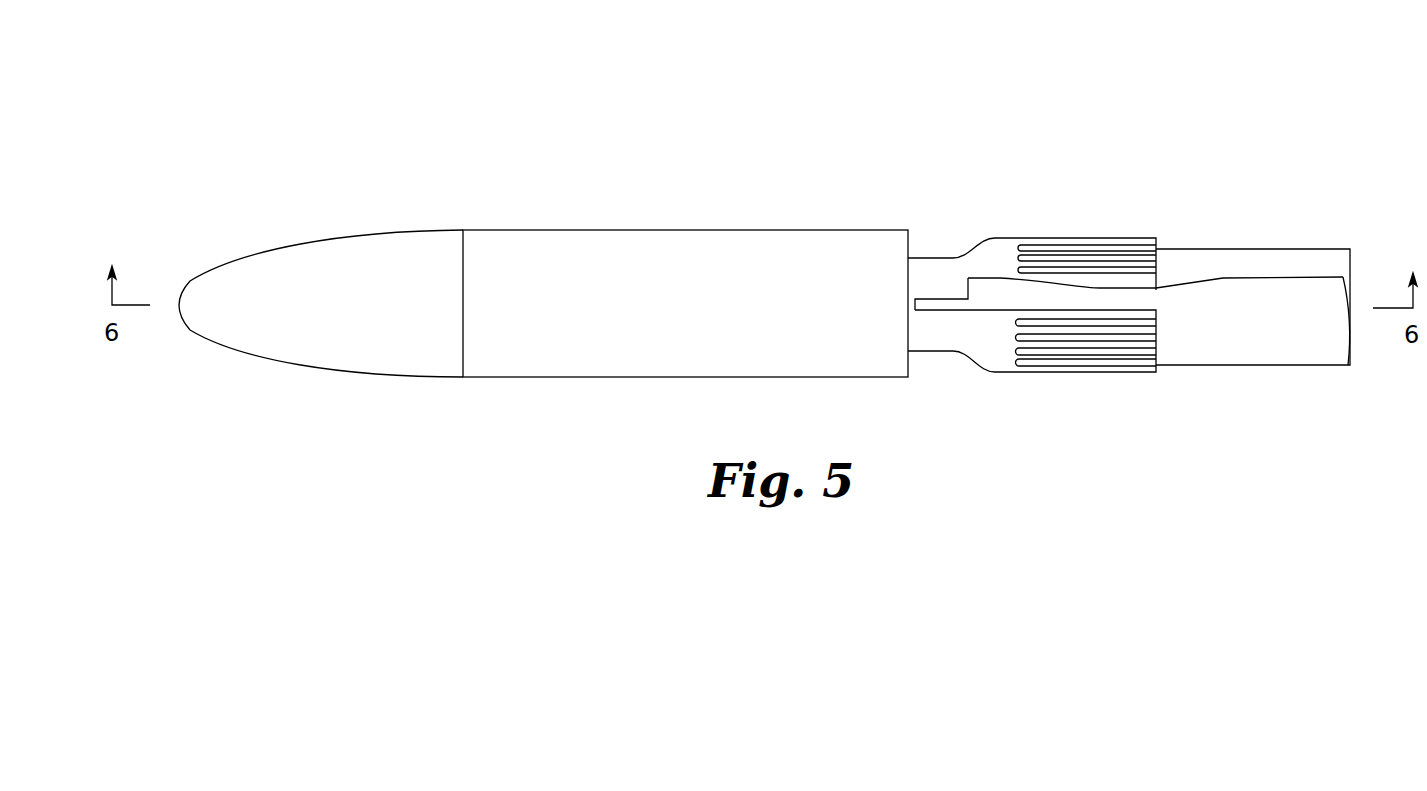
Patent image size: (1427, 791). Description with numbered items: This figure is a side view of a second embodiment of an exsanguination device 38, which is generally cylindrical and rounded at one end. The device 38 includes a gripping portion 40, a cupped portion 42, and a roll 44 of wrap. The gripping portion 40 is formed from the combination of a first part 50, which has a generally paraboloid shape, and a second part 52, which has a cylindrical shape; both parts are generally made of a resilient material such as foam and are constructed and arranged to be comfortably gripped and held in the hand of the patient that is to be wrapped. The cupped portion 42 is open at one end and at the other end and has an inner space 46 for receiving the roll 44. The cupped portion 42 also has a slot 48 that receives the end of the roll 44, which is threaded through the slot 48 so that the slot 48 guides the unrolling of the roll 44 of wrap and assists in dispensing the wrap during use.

The exsanguination device 38 is at (799, 136).
The gripping portion 40 is at (287, 250).
The cupped portion 42 is at (1000, 373).
The roll of wrap 44 is at (1245, 272).
The inner space 46 is at (1156, 355).
The slot 48 is at (948, 303).
The first part 50 is at (287, 365).
The second part 52 is at (715, 380).